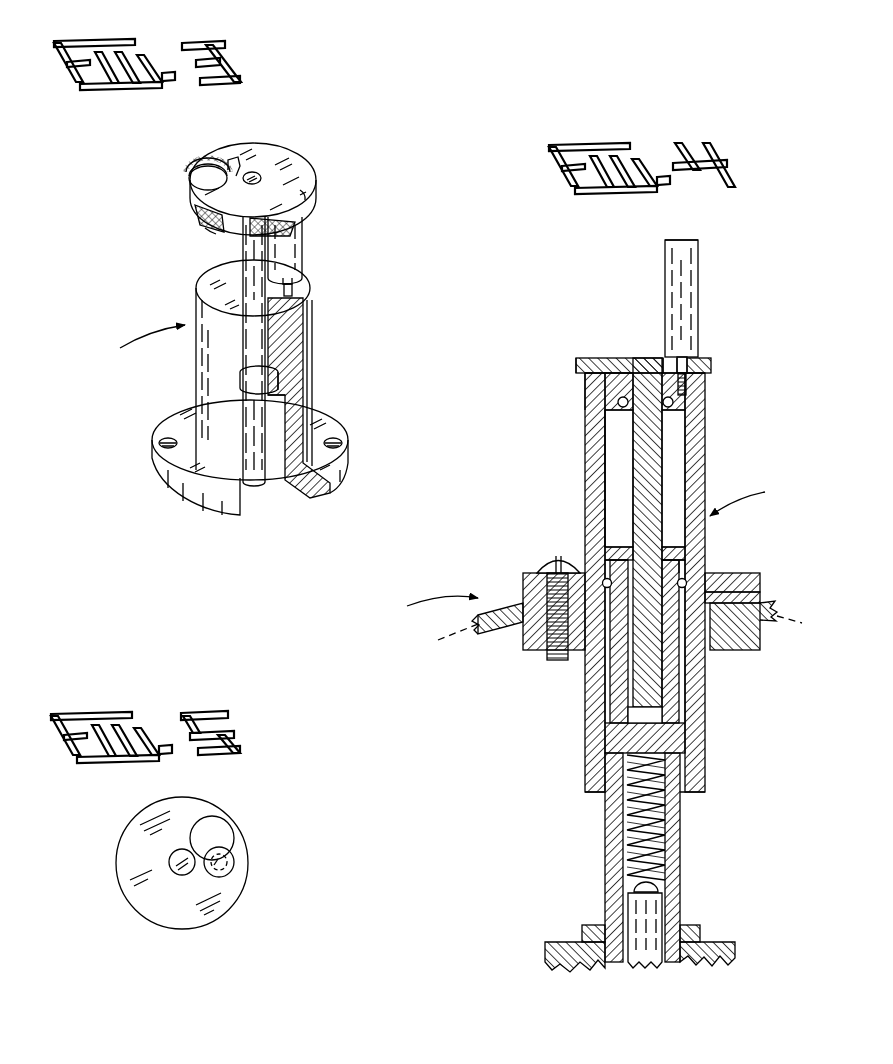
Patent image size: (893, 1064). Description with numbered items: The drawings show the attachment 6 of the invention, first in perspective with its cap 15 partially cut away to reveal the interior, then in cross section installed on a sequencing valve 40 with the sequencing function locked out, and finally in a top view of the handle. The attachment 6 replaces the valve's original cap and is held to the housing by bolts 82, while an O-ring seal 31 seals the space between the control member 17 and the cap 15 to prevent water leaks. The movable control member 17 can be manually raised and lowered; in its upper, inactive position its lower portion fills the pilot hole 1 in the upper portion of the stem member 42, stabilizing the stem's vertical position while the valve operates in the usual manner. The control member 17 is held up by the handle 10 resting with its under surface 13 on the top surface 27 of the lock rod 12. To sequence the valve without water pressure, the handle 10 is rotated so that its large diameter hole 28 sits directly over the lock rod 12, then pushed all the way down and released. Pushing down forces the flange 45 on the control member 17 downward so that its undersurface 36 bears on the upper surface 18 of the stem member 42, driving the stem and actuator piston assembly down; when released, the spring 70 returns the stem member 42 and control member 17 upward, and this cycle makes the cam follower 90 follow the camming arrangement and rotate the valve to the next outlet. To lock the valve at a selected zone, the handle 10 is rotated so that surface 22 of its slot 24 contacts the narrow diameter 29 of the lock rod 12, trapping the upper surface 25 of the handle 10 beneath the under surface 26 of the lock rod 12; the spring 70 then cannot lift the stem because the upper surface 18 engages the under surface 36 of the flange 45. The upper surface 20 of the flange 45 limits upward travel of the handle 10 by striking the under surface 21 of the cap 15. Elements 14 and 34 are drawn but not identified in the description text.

In FIG. 4, the pilot hole 1 is at (640, 715).
In FIG. 3, the attachment 6 is at (141, 343).
In FIG. 4, the attachment 6 is at (748, 496).
In FIG. 3, the handle 10 is at (298, 150).
In FIG. 4, the handle 10 is at (711, 368).
In FIG. 5, the handle 10 is at (125, 827).
In FIG. 3, the lock rod 12 is at (300, 240).
In FIG. 4, the lock rod 12 is at (698, 262).
In FIG. 3, the under surface 13 is at (212, 232).
In FIG. 4, the under surface 13 is at (585, 382).
In FIG. 3, the top of body 14 is at (205, 286).
In FIG. 4, the top of body 14 is at (615, 370).
In FIG. 3, the cap 15 is at (305, 338).
In FIG. 4, the cap 15 is at (705, 462).
In FIG. 3, the control member 17 is at (262, 177).
In FIG. 4, the control member 17 is at (630, 685).
In FIG. 5, the control member 17 is at (170, 861).
In FIG. 4, the upper surface 18 is at (608, 560).
In FIG. 3, the upper surface 20 is at (245, 373).
In FIG. 4, the upper surface 20 is at (612, 548).
In FIG. 3, the under surface 21 is at (278, 390).
In FIG. 4, the under surface 21 is at (618, 420).
In FIG. 3, the surface 22 is at (230, 160).
In FIG. 5, the surface 22 is at (234, 866).
In FIG. 3, the slot 24 is at (205, 166).
In FIG. 4, the slot 24 is at (664, 356).
In FIG. 5, the slot 24 is at (232, 855).
In FIG. 3, the upper surface 25 is at (305, 196).
In FIG. 4, the upper surface 25 is at (576, 357).
In FIG. 3, the under surface 26 is at (298, 283).
In FIG. 4, the under surface 26 is at (690, 358).
In FIG. 4, the top surface 27 is at (688, 240).
In FIG. 3, the large diameter hole 28 is at (205, 182).
In FIG. 5, the large diameter hole 28 is at (215, 830).
In FIG. 3, the narrow diameter 29 is at (293, 290).
In FIG. 4, the narrow diameter 29 is at (690, 387).
In FIG. 5, the narrow diameter 29 is at (214, 873).
In FIG. 4, the O-ring seal 31 is at (618, 404).
In FIG. 4, the mounting flange 34 is at (760, 582).
In FIG. 3, the undersurface 36 is at (275, 395).
In FIG. 4, the undersurface 36 is at (688, 580).
In FIG. 4, the sequencing valve 40 is at (449, 617).
In FIG. 4, the stem member 42 is at (683, 680).
In FIG. 4, the flange 45 is at (680, 556).
In FIG. 4, the spring 70 is at (627, 828).
In FIG. 4, the bolts 82 is at (537, 562).
In FIG. 4, the cam follower 90 is at (705, 745).